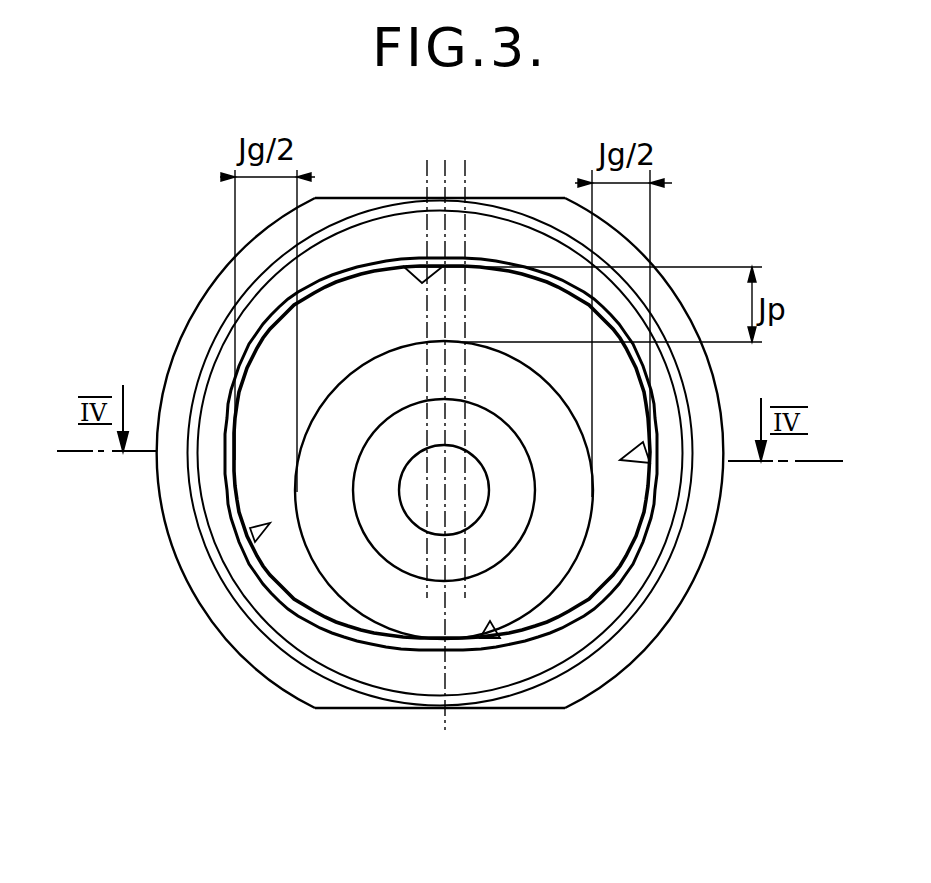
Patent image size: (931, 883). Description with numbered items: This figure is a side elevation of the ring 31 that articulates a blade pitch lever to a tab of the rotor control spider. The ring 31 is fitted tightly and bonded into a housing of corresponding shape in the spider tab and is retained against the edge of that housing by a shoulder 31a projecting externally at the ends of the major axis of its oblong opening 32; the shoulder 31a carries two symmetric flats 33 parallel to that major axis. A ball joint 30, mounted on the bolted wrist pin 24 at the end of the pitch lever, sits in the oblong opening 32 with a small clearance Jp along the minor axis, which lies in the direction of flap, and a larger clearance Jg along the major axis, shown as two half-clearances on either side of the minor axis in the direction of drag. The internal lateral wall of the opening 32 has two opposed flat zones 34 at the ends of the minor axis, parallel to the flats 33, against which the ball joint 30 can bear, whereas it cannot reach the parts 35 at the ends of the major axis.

The wrist pin 24 is at (462, 487).
The ball joint 30 is at (536, 549).
The ring 31 is at (210, 348).
The shoulder 31a is at (268, 655).
The oblong opening 32 is at (503, 300).
The flats 33 is at (505, 197).
The flat zones 34 is at (422, 283).
The parts at ends of major axis 35 is at (650, 463).